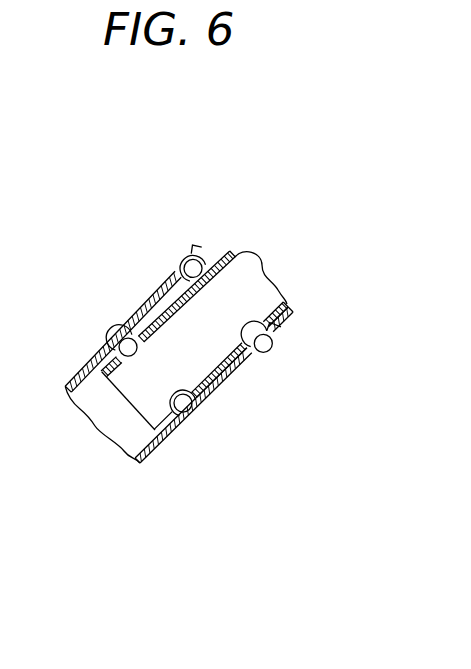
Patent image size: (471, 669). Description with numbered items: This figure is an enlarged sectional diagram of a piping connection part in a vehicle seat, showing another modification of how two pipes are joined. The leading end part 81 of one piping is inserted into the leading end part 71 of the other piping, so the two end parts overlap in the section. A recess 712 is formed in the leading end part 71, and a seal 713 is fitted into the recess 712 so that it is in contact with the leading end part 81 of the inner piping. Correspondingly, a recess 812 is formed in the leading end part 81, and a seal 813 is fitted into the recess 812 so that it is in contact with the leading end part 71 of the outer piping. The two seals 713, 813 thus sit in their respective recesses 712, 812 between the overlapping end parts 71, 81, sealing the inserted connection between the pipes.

The leading end part of the piping 7 71 is at (92, 354).
The recess 712 is at (182, 262).
The seal 713 is at (193, 268).
The leading end part of the piping 8 81 is at (232, 366).
The recess 812 is at (200, 414).
The seal 813 is at (183, 404).